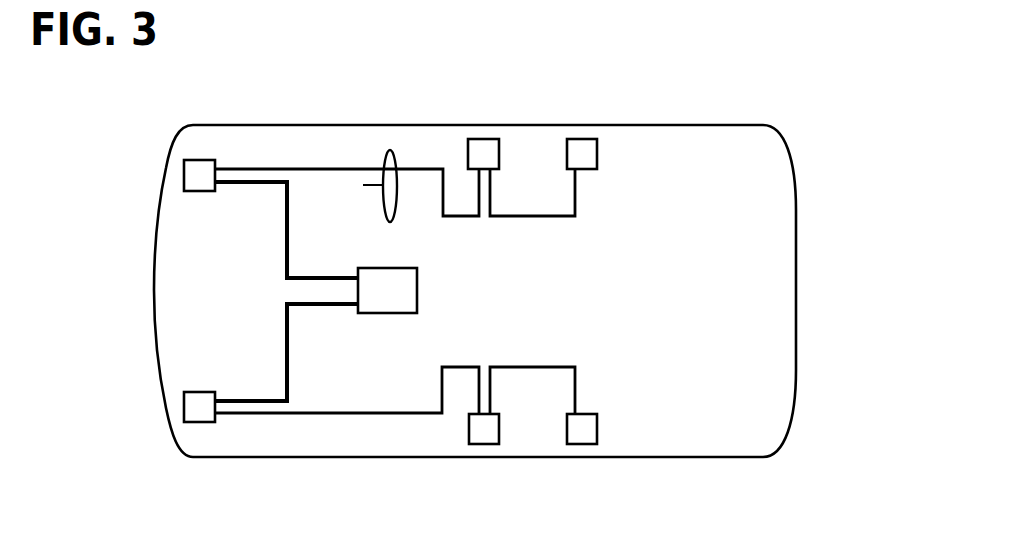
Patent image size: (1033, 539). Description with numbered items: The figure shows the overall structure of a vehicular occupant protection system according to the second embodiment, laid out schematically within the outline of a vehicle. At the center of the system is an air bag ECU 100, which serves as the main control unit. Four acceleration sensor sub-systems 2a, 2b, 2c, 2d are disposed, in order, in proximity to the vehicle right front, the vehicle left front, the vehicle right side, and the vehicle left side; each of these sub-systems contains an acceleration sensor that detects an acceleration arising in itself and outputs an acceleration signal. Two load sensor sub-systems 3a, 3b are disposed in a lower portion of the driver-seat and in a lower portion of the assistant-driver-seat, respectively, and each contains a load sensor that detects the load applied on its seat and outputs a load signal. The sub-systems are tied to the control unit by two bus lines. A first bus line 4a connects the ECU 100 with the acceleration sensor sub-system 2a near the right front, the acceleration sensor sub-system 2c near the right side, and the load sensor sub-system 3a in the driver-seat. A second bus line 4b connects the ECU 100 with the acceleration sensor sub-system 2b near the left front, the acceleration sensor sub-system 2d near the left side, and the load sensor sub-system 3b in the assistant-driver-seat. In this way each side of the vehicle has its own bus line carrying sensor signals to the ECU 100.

The acceleration sensor sub-system 2a is at (198, 170).
The acceleration sensor sub-system 2b is at (199, 415).
The acceleration sensor sub-system 2c is at (582, 153).
The acceleration sensor sub-system 2d is at (582, 435).
The load sensor sub-system 3a is at (485, 153).
The load sensor sub-system 3b is at (484, 435).
The first bus line 4a is at (320, 168).
The second bus line 4b is at (380, 413).
The air bag ECU 100 is at (417, 290).